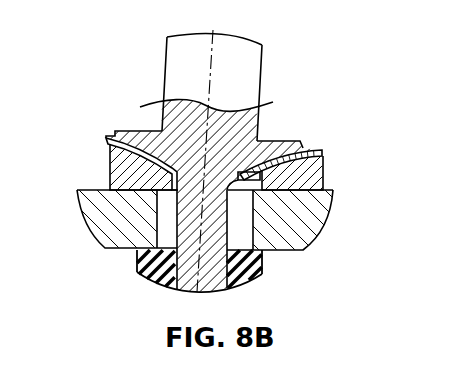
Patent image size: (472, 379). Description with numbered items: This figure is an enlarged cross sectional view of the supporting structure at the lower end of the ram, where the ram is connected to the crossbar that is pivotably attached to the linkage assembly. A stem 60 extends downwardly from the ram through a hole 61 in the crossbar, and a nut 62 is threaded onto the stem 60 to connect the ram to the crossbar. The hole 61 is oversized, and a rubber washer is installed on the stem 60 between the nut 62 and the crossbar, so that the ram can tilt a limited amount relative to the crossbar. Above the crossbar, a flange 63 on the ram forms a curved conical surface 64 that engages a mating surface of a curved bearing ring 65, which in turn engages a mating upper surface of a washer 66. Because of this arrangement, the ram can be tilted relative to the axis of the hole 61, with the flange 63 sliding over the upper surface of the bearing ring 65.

The stem 60 is at (212, 292).
The hole 61 is at (285, 212).
The nut 62 is at (253, 266).
The flange 63 is at (286, 143).
The curved conical surface 64 is at (106, 141).
The curved bearing ring 65 is at (323, 161).
The washer 66 is at (326, 176).